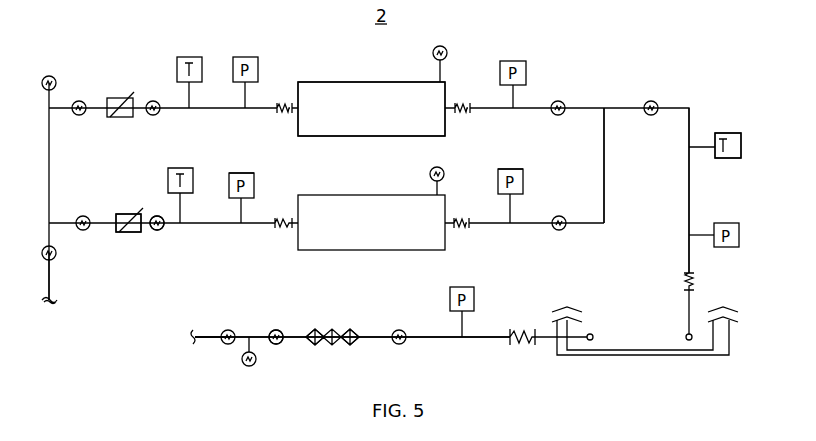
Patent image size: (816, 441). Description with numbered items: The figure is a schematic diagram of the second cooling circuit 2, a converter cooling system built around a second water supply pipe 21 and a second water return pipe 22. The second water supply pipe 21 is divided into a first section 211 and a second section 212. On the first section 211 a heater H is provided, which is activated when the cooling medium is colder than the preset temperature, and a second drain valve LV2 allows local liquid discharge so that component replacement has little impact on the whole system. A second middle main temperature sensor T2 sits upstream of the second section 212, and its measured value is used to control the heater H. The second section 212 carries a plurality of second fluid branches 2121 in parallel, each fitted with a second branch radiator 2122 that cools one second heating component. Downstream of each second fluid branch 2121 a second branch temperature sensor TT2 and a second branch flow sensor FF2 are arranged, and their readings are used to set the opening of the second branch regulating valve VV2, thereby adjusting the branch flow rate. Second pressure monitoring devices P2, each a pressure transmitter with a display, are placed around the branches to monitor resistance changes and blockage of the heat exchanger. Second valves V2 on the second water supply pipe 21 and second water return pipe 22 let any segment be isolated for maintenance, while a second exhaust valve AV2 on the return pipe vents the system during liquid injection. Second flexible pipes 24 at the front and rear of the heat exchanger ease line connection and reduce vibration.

The second cooling circuit 2 is at (371, 109).
The second water supply pipe 21 is at (207, 335).
The second water return pipe 22 is at (50, 285).
The second flexible pipe 24 is at (284, 102).
The first section 211 is at (495, 312).
The second section 212 is at (689, 102).
The second fluid branch 2121 is at (583, 107).
The second branch radiator 2122 is at (327, 208).
The second valve V2 is at (556, 115).
The second exhaust valve AV2 is at (56, 82).
The second branch temperature sensor TT2 is at (185, 168).
The second pressure monitoring device P2 is at (243, 213).
The second branch flow sensor FF2 is at (128, 230).
The second branch regulating valve VV2 is at (161, 228).
The second drain valve LV2 is at (243, 363).
The heater H is at (333, 330).
The second middle main temperature sensor T2 is at (727, 158).